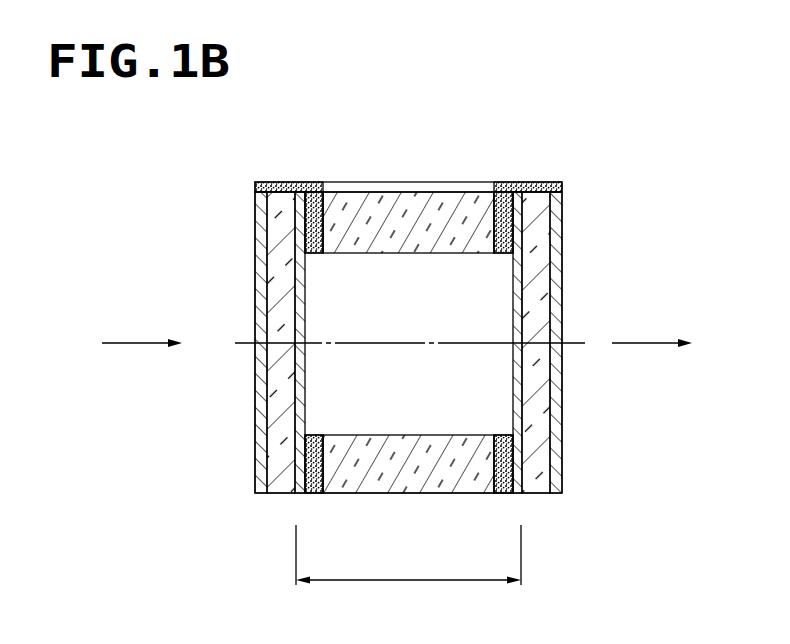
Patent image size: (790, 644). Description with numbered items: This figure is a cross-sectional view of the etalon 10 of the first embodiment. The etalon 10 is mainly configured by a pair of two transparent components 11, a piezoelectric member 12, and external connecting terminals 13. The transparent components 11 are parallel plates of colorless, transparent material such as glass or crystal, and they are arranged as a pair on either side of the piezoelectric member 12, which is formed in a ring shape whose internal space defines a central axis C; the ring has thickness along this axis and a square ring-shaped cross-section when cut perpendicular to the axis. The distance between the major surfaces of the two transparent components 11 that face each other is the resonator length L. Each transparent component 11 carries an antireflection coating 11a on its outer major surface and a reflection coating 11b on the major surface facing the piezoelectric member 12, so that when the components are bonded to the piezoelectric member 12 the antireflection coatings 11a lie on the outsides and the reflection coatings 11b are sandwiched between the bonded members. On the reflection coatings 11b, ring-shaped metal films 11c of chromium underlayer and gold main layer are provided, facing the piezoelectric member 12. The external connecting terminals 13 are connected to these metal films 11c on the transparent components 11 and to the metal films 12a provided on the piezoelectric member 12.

The etalon 10 is at (380, 150).
The transparent component 11 is at (407, 385).
The antireflection coating 11a is at (258, 493).
The reflection coating 11b is at (293, 493).
The metal film 11c is at (308, 493).
The piezoelectric member 12 is at (404, 494).
The metal film 12a is at (318, 494).
The external connecting terminal 13 is at (279, 182).
The central axis C is at (575, 345).
The resonator length L is at (408, 566).